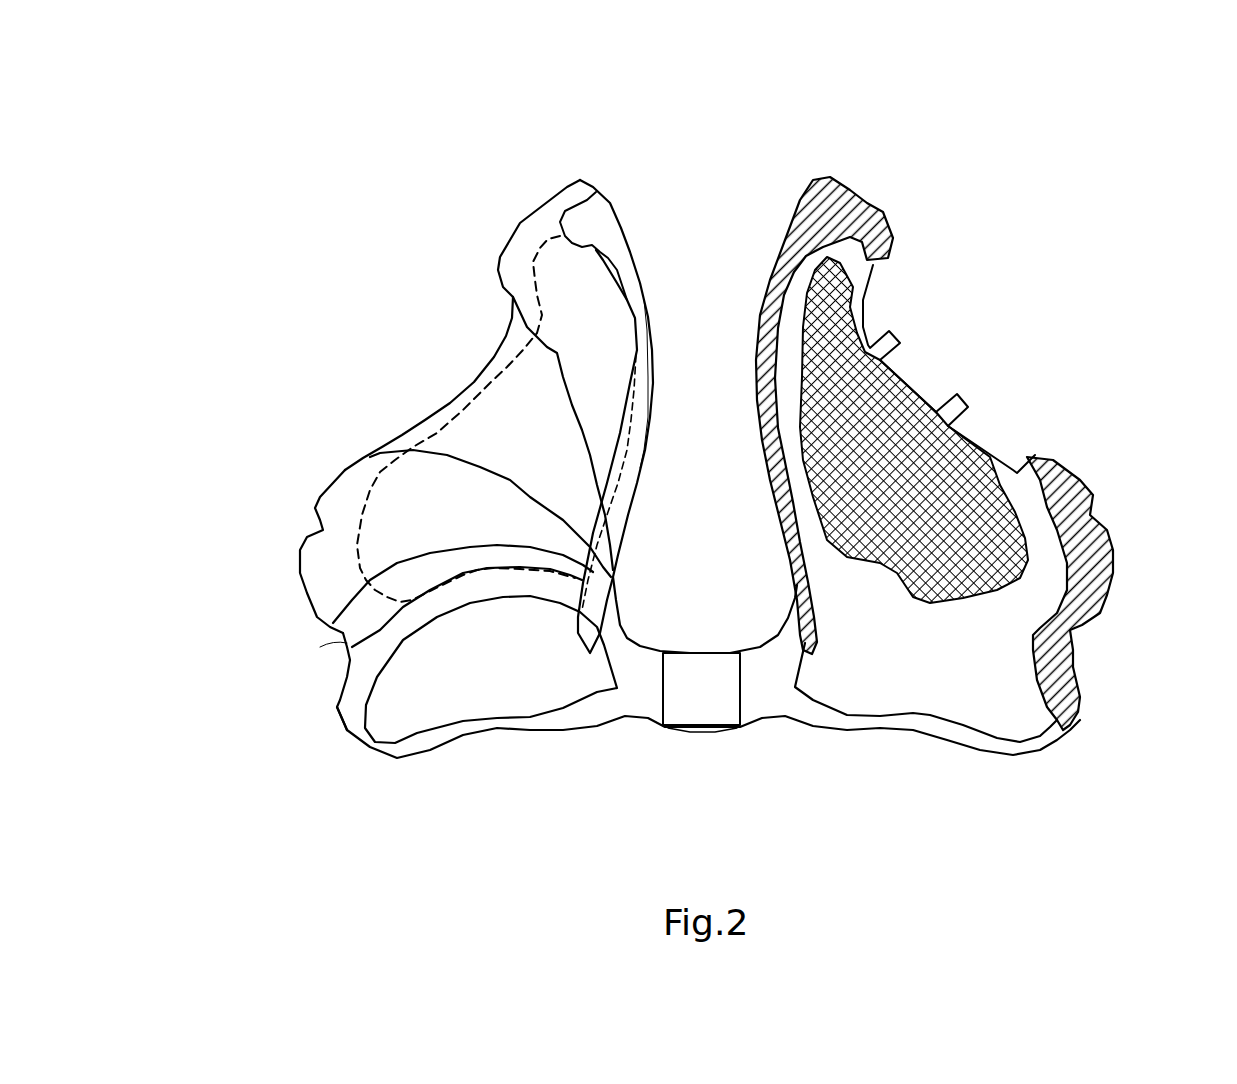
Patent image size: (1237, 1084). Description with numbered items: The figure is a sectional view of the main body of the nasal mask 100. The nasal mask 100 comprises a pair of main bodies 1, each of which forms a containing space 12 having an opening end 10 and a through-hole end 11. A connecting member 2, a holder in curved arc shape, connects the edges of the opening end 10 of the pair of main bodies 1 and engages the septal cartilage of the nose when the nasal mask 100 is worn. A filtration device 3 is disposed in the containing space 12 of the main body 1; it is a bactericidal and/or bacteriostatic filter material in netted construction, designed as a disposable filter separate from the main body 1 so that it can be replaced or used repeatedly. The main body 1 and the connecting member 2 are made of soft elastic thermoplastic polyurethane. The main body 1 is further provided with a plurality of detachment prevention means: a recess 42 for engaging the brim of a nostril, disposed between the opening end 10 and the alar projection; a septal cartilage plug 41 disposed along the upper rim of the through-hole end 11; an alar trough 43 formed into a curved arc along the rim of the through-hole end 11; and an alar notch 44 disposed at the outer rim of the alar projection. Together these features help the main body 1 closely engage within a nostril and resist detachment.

The nasal mask 100 is at (1037, 146).
The main body 1 is at (735, 379).
The connecting member 2 is at (701, 733).
The filtration device 3 is at (946, 430).
The opening end 10 is at (708, 695).
The through-hole end 11 is at (1016, 437).
The containing space 12 is at (466, 419).
The septal cartilage plug 41 is at (569, 218).
The recess 42 is at (705, 681).
The alar trough 43 is at (473, 413).
The alar notch 44 is at (704, 593).